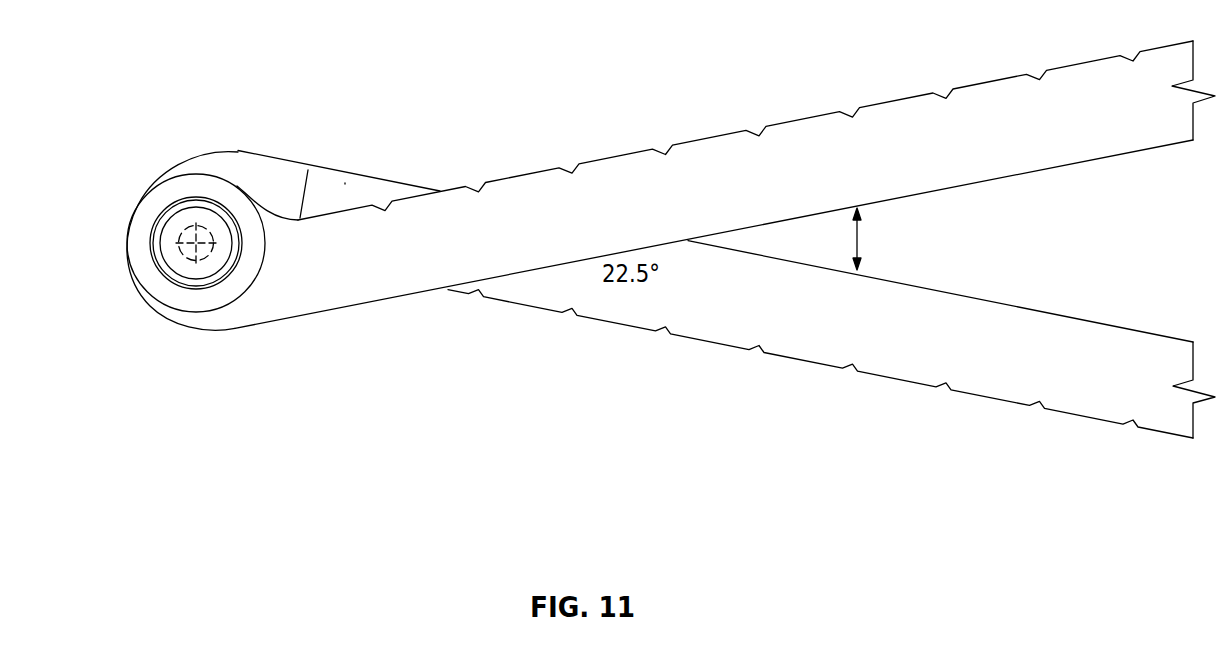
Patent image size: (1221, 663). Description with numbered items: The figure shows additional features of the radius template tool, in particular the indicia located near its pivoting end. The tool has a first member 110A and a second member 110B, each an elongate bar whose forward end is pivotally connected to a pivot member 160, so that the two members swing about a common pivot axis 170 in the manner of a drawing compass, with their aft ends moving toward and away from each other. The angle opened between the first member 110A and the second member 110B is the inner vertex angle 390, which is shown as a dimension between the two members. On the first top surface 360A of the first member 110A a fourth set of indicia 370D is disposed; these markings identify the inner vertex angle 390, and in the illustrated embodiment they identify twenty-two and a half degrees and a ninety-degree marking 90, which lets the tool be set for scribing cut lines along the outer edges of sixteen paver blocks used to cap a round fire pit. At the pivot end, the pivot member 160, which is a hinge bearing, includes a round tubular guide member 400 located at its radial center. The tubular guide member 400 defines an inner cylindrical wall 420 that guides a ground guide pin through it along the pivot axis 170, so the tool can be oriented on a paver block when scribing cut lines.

The first member 110A is at (868, 342).
The second member 110B is at (897, 160).
The pivot member 160 is at (153, 233).
The pivot axis 170 is at (197, 252).
The first top surface 360A is at (1082, 393).
The fourth set of indicia 370D is at (628, 253).
The inner vertex angle 390 is at (862, 243).
The tubular guide member 400 is at (190, 198).
The inner cylindrical wall 420 is at (218, 282).
The angle reference line 90 is at (318, 194).